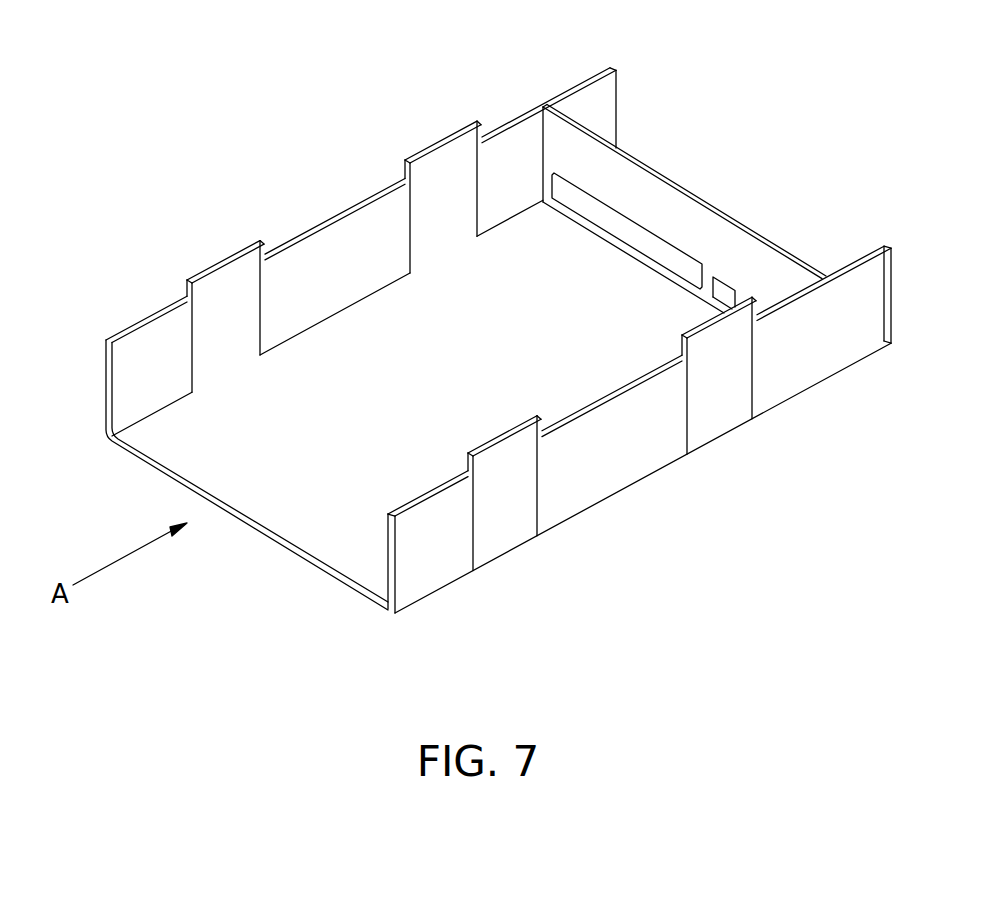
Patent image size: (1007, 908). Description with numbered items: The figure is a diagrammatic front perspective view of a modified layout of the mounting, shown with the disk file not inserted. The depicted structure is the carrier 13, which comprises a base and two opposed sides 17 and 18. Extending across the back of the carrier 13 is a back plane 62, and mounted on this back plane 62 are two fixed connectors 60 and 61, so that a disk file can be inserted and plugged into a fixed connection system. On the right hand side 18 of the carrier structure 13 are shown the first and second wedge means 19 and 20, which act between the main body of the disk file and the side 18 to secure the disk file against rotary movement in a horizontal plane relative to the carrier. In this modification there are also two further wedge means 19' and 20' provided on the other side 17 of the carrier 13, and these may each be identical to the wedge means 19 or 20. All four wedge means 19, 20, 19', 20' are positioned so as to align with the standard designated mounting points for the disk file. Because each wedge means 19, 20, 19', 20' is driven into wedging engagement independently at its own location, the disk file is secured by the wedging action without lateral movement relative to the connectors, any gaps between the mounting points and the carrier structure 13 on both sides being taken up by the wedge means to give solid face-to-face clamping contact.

The carrier 13 is at (297, 233).
The side 17 is at (103, 357).
The side 18 is at (438, 568).
The first wedge means 19 is at (462, 493).
The further wedge means 19' is at (193, 301).
The second wedge means 20 is at (675, 375).
The further wedge means 20' is at (413, 190).
The fixed connector 60 is at (607, 218).
The fixed connector 61 is at (733, 292).
The back plane 62 is at (703, 202).